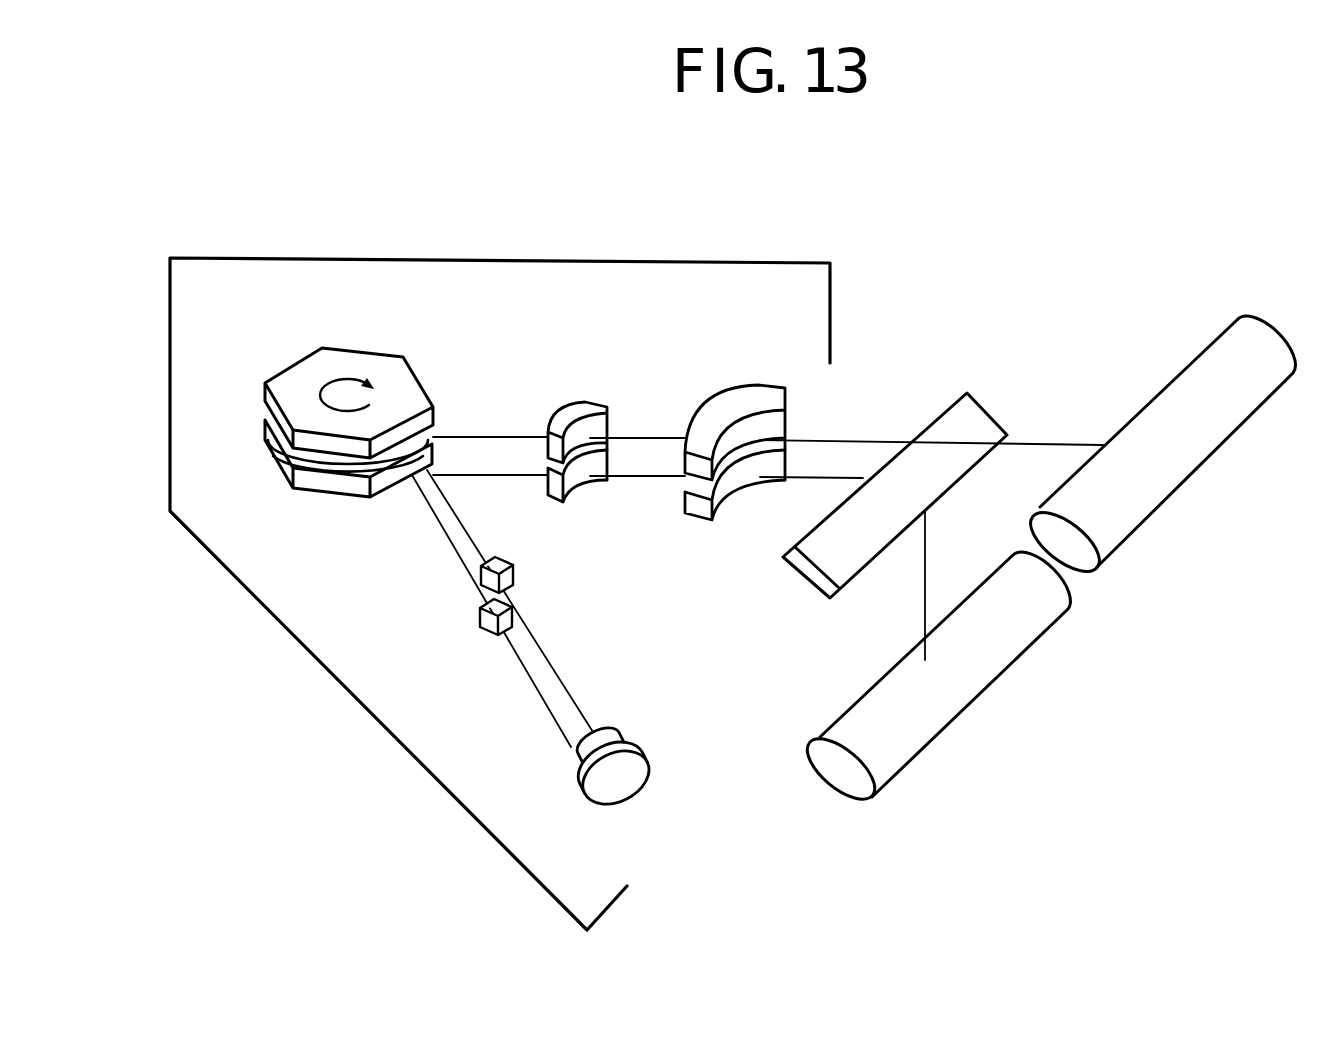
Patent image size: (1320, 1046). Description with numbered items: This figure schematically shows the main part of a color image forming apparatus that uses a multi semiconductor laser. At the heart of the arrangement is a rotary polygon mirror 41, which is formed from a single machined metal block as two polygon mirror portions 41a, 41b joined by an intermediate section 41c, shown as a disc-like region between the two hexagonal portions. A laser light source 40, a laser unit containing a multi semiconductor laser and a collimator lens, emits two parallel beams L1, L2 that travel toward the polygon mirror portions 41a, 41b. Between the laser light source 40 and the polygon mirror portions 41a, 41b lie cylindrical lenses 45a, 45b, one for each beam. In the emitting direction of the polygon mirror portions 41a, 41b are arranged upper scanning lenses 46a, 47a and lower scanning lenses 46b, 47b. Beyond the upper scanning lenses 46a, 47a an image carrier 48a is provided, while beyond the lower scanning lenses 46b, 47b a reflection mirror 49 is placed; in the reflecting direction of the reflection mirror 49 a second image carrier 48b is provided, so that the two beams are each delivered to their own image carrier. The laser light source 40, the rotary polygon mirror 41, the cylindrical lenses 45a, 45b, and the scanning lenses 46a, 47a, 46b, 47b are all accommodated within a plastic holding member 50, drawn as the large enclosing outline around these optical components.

The laser light source 40 is at (613, 795).
The rotary polygon mirror 41 is at (345, 425).
The polygon mirror portion 41a is at (307, 373).
The polygon mirror portion 41b is at (341, 487).
The disc 41c is at (317, 460).
The cylindrical lens 45a is at (484, 575).
The cylindrical lens 45b is at (484, 631).
The upper scanning lens 46a is at (597, 400).
The lower scanning lens 46b is at (582, 492).
The upper scanning lens 47a is at (762, 400).
The lower scanning lens 47b is at (727, 505).
The image carrier 48a is at (1175, 400).
The image carrier 48b is at (1008, 647).
The reflection mirror 49 is at (950, 420).
The plastic holding member 50 is at (612, 260).
The parallel beam L1 is at (576, 699).
The parallel beam L2 is at (564, 723).